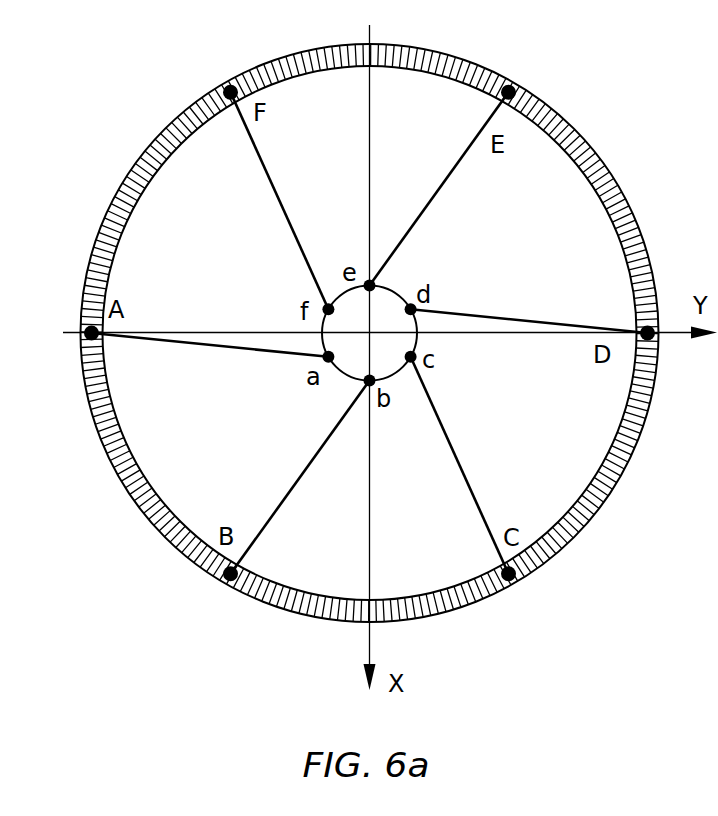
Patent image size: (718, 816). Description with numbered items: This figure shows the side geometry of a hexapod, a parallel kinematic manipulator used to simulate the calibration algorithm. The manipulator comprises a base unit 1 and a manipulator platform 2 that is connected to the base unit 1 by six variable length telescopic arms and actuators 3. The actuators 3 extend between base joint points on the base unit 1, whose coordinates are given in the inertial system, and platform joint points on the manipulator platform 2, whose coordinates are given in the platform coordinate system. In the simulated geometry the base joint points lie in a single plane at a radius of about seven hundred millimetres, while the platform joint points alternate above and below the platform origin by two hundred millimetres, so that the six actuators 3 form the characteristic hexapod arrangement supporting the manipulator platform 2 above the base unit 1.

The base unit 1 is at (617, 243).
The manipulator platform 2 is at (347, 378).
The variable length telescopic arms and actuators 3 is at (273, 194).